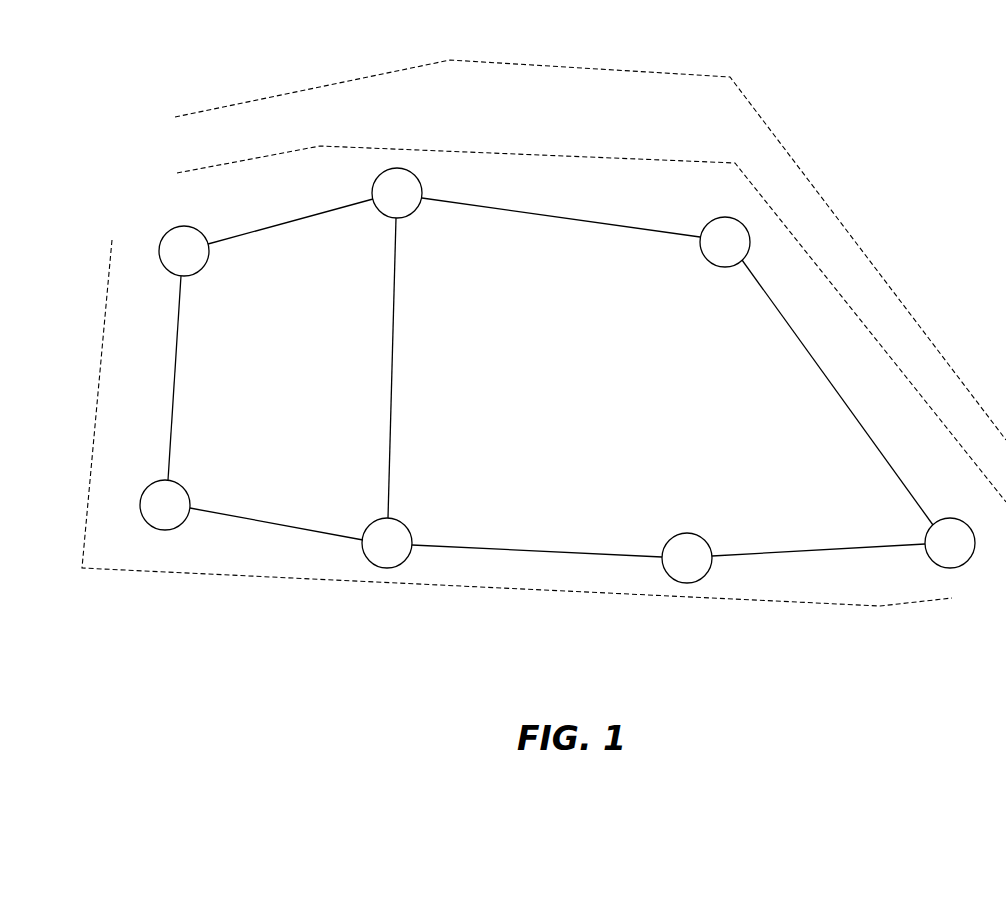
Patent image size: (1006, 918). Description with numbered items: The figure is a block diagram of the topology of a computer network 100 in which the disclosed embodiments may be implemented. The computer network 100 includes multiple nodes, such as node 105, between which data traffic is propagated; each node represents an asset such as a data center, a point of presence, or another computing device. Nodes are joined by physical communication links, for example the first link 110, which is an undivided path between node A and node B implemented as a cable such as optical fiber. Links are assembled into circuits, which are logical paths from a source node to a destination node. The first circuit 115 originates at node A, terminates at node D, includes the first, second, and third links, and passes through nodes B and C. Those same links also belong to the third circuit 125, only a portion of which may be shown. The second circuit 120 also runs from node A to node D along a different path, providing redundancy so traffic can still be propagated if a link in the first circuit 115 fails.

The computer network 100 is at (889, 56).
The node 105 is at (178, 227).
The link e1 110 is at (282, 223).
The circuit C1 115 is at (550, 157).
The circuit C2 120 is at (425, 587).
The circuit C3 125 is at (373, 78).